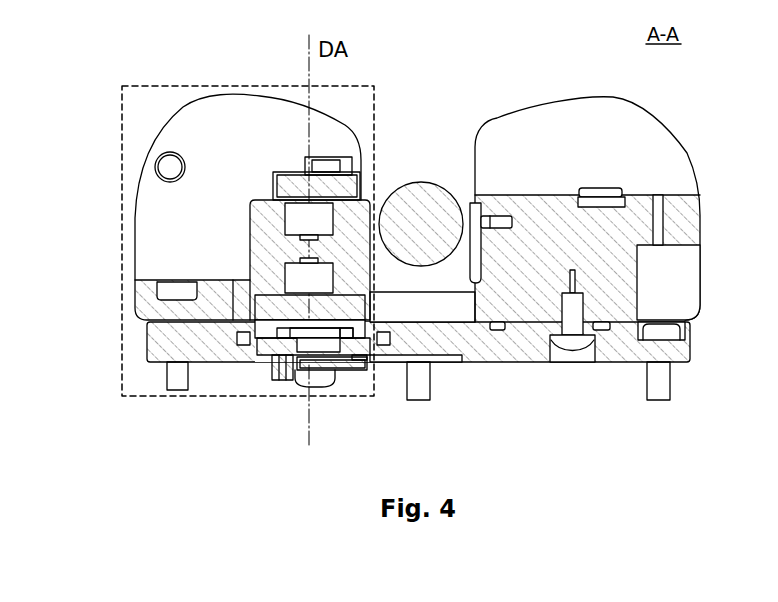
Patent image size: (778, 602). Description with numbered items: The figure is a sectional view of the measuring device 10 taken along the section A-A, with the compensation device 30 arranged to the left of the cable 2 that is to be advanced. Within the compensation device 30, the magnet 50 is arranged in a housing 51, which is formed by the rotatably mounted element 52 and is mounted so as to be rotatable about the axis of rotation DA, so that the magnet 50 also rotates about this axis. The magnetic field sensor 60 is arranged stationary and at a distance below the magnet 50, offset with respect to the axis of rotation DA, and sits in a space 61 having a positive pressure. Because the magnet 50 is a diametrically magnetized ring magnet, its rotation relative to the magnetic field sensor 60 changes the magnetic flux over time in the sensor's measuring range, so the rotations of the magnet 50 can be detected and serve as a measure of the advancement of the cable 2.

The cable 2 is at (420, 187).
The measuring device 10 is at (154, 84).
The compensation device 30 is at (152, 130).
The magnet 50 is at (270, 309).
The housing 51 is at (249, 258).
The rotatably mounted element 52 is at (202, 250).
The magnetic field sensor 60 is at (300, 333).
The space 61 is at (345, 333).